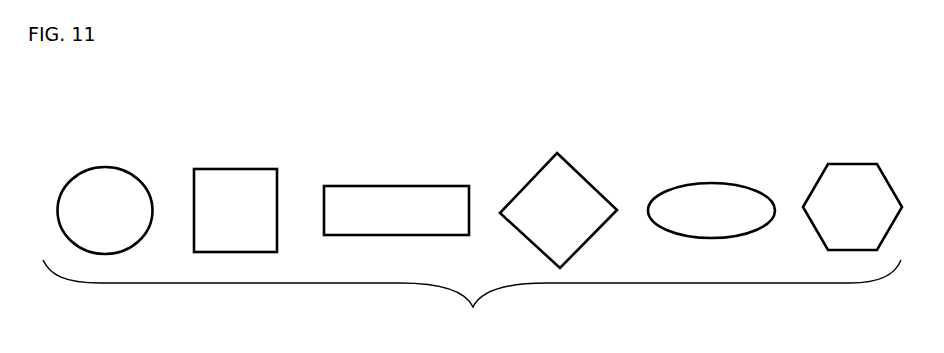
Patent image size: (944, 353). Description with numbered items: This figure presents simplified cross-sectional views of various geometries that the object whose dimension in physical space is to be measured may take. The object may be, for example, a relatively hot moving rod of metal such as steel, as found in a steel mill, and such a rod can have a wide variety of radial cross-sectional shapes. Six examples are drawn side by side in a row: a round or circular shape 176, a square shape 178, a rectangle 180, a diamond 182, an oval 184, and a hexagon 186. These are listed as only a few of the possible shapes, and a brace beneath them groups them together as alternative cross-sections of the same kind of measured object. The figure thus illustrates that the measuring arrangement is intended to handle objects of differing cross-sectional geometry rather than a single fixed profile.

The round (circular) shape 176 is at (126, 168).
The square shape 178 is at (252, 168).
The rectangle shape 180 is at (402, 183).
The diamond shape 182 is at (582, 171).
The oval shape 184 is at (705, 180).
The hexagon shape 186 is at (865, 162).